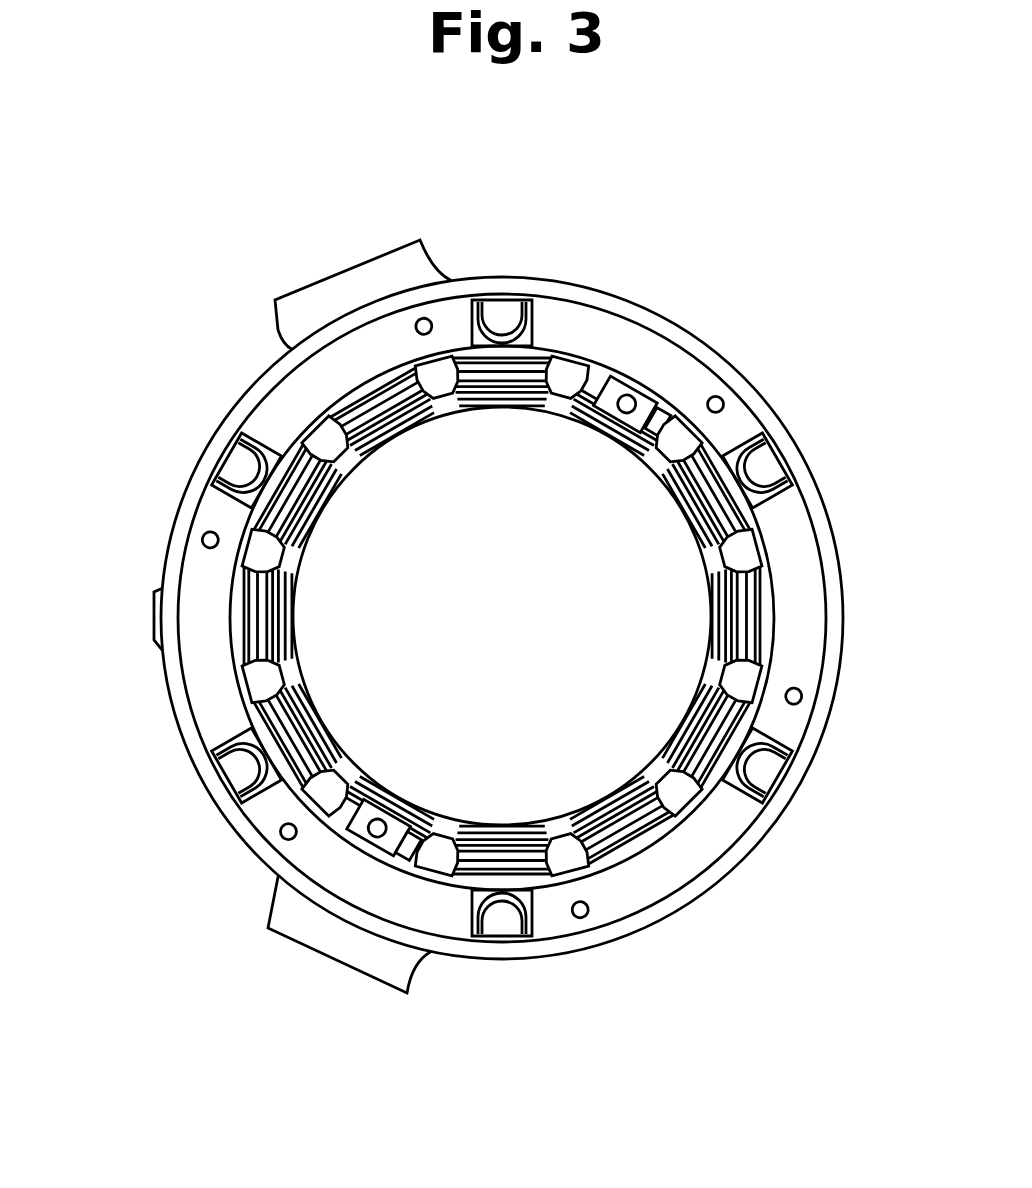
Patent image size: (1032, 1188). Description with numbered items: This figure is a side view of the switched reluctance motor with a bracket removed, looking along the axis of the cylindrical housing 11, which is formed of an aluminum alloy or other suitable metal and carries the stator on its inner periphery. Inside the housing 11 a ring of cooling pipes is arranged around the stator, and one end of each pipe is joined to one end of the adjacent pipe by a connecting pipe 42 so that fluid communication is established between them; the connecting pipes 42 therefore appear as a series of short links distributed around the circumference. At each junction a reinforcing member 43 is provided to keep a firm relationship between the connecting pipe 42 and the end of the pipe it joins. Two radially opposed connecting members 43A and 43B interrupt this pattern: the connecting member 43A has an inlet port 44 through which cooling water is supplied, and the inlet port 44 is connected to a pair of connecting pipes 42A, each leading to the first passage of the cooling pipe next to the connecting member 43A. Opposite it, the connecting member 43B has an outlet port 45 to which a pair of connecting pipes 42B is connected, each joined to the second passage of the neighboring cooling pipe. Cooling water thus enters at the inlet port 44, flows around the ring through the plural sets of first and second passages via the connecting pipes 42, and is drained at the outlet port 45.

The housing 11 is at (163, 650).
The connecting pipe 42 is at (570, 377).
The connecting pipe 42A is at (680, 403).
The connecting pipe 42B is at (397, 862).
The reinforcing member 43 is at (447, 360).
The connecting member 43A is at (615, 397).
The connecting member 43B is at (373, 845).
The inlet port 44 is at (657, 397).
The outlet port 45 is at (365, 835).